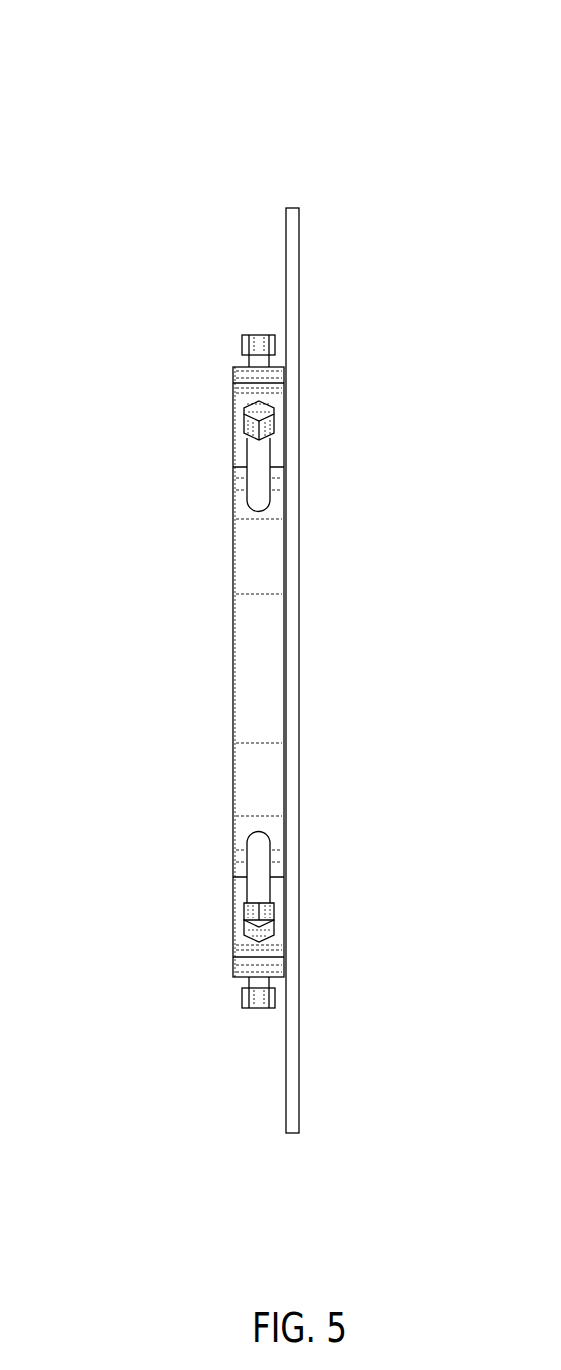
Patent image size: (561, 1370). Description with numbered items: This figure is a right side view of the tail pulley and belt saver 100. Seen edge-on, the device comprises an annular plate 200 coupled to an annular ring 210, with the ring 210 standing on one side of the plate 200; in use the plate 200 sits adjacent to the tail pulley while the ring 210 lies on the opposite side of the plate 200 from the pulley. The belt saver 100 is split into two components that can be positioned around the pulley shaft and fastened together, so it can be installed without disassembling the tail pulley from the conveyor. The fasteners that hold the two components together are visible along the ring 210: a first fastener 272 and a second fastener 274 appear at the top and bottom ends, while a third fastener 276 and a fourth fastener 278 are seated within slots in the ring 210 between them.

The tail pulley and belt saver 100 is at (138, 183).
The annular plate 200 is at (300, 267).
The annular ring 210 is at (233, 716).
The first fastener 272 is at (247, 335).
The second fastener 274 is at (250, 1012).
The third fastener 276 is at (248, 427).
The fourth fastener 278 is at (245, 925).